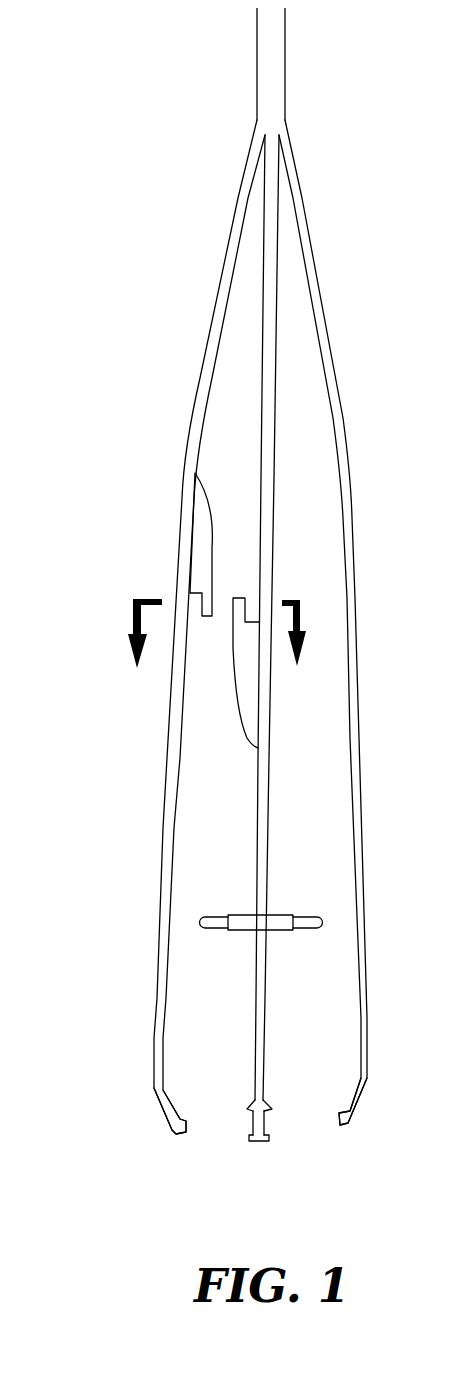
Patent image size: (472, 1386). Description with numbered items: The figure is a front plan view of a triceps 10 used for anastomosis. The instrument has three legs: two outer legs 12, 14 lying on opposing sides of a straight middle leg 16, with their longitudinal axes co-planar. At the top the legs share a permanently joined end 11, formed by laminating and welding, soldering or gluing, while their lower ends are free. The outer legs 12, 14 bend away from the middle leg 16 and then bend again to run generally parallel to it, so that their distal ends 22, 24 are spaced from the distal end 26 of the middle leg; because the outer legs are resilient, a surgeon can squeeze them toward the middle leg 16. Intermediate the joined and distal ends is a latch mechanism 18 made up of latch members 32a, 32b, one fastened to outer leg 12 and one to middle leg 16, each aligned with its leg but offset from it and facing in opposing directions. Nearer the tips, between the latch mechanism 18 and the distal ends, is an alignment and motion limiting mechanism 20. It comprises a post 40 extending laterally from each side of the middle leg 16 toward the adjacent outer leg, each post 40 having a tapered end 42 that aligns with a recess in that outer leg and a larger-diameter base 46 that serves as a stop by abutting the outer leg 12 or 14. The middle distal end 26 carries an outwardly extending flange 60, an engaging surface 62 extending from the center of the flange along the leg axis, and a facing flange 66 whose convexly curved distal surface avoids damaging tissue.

The triceps 10 is at (322, 106).
The joined end 11 is at (258, 70).
The outer leg 12 is at (163, 868).
The outer leg 14 is at (361, 768).
The middle leg 16 is at (270, 832).
The latch mechanism 18 is at (137, 576).
The alignment and motion limiting mechanism 20 is at (193, 927).
The distal end 22 is at (175, 1133).
The distal end 24 is at (349, 1127).
The distal end 26 is at (245, 1123).
The latch member 32a is at (207, 620).
The latch member 32b is at (245, 602).
The post 40 is at (229, 940).
The tapered end 42 is at (322, 924).
The base 46 is at (230, 917).
The flange 60 is at (265, 1124).
The engaging surface 62 is at (265, 1128).
The facing flange 66 is at (259, 1144).